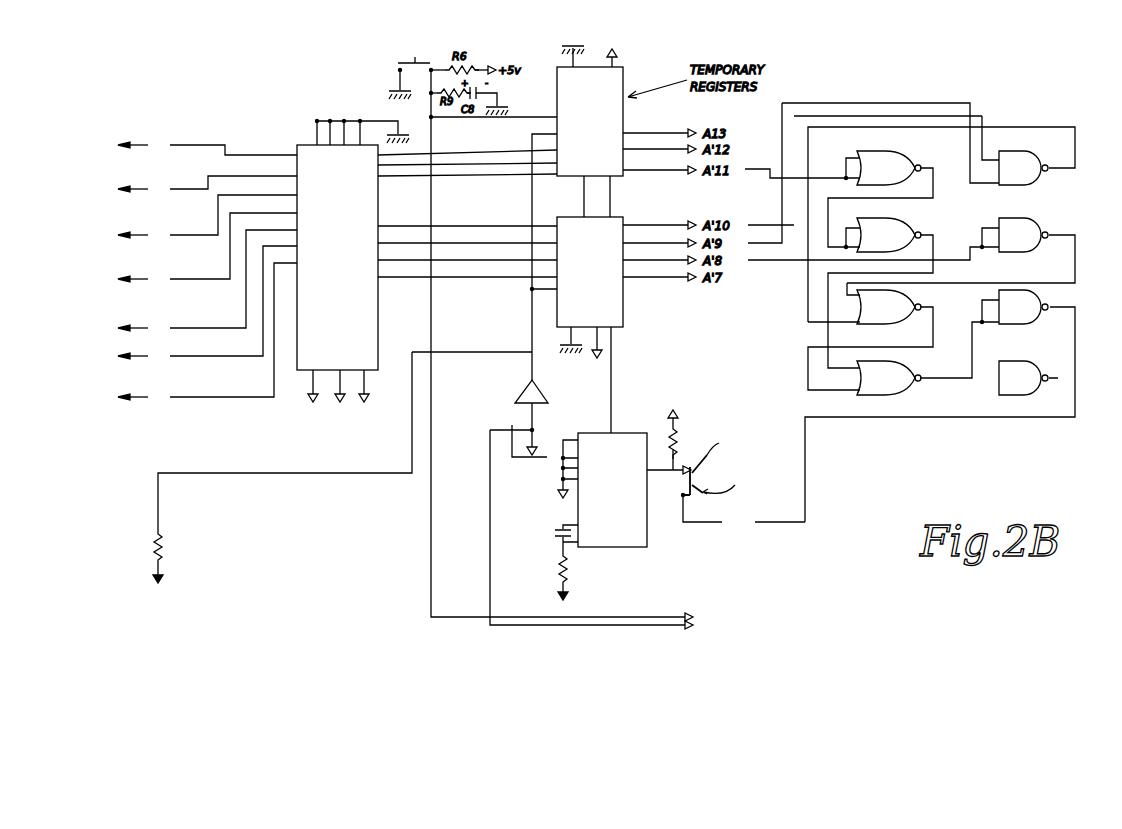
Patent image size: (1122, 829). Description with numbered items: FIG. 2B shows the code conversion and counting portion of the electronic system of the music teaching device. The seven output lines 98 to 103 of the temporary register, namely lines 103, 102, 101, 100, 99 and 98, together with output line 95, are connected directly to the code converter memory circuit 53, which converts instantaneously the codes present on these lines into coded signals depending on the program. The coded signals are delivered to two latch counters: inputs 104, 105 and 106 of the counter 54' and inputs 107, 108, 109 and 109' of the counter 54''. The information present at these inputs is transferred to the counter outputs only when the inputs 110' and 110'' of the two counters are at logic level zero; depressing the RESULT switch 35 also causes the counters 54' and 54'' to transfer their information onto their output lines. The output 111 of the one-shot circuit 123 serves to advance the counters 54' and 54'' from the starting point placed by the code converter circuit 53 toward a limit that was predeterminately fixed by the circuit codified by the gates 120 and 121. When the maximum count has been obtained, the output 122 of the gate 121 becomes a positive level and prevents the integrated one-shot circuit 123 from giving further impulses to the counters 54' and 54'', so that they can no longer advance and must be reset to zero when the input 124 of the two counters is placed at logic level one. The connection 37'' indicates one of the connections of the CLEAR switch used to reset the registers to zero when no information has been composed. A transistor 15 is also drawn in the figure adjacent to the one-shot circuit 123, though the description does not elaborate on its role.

The code converter circuit 53 is at (318, 156).
The RESULT switch 35 is at (399, 61).
The output line 103 is at (208, 142).
The output line 102 is at (194, 185).
The output line 101 is at (195, 230).
The output line 100 is at (190, 277).
The output line 99 is at (195, 327).
The output line 98 is at (198, 344).
The output line 95 is at (195, 399).
The counter input 104 is at (486, 149).
The counter input 105 is at (455, 172).
The counter input 106 is at (479, 180).
The counter input 107 is at (411, 228).
The counter input 108 is at (452, 237).
The counter input 109 is at (467, 277).
The counter input 109' is at (467, 286).
The counter transfer input 110' is at (493, 104).
The counter transfer input 110'' is at (451, 376).
The counter reset input 124 is at (532, 204).
The counter 54' is at (607, 126).
The counter 54'' is at (605, 296).
The one-shot output 111 is at (612, 367).
The CLEAR switch connection 37'' is at (578, 501).
The one-shot circuit 123 is at (647, 552).
The transistor 15 is at (861, 418).
The gate output 122 is at (805, 462).
The gate 120 is at (886, 356).
The gate 121 is at (1030, 219).